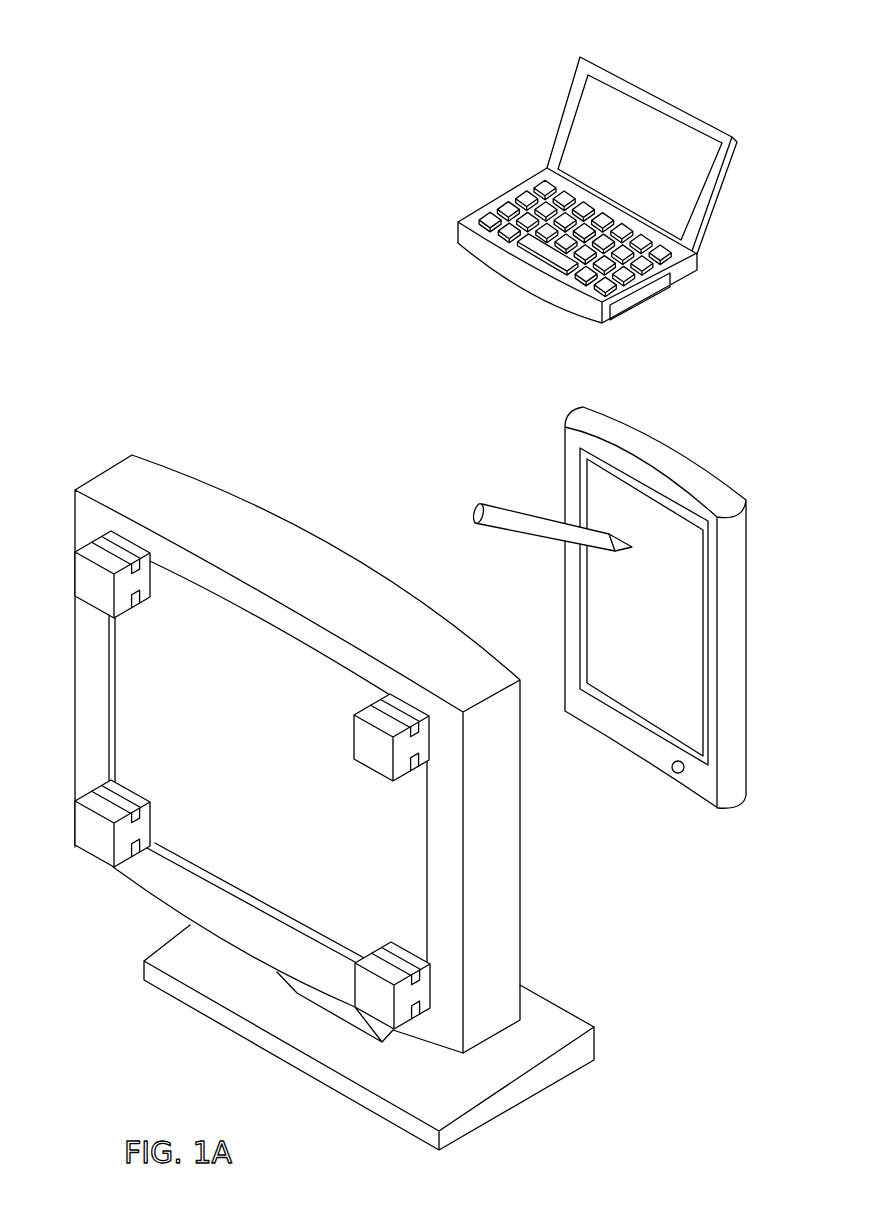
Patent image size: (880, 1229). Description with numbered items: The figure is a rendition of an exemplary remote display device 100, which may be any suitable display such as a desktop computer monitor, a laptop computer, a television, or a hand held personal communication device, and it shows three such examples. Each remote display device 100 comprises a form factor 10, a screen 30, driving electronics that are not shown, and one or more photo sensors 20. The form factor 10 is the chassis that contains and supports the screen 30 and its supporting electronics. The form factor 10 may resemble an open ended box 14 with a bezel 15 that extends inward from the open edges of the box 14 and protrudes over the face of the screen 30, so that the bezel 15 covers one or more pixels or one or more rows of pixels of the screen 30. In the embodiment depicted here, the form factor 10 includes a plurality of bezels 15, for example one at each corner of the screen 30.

The form factor 10 is at (406, 589).
The open ended box 14 is at (452, 637).
The bezel 15 is at (673, 117).
The photo sensor 20 is at (587, 82).
The screen 30 is at (648, 169).
The remote display device 100 is at (406, 589).